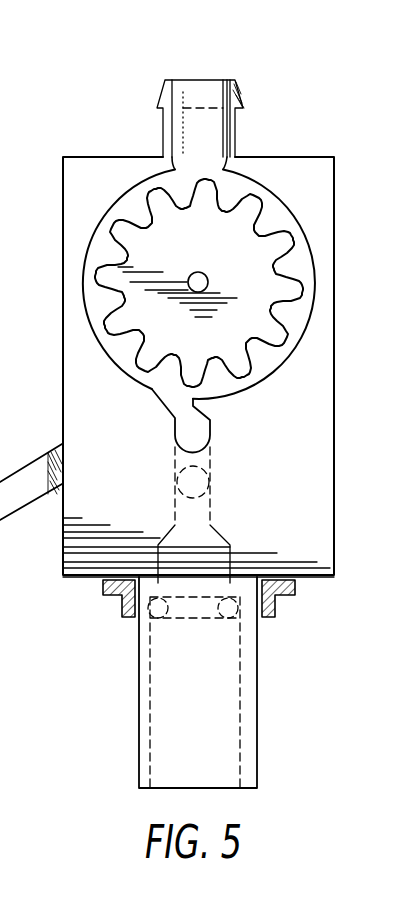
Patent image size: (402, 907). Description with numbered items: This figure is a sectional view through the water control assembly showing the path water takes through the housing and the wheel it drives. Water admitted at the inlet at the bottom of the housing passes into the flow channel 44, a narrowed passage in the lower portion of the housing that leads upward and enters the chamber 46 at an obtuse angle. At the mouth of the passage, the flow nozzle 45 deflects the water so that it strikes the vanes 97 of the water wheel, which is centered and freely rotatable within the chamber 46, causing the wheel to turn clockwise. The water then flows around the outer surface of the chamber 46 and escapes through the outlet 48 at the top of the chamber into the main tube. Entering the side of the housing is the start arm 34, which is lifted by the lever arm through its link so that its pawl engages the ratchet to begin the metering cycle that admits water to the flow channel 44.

The start arm 34 is at (27, 504).
The flow channel 44 is at (205, 482).
The flow nozzle 45 is at (197, 408).
The chamber 46 is at (264, 362).
The outlet 48 is at (206, 80).
The vanes 97 is at (263, 213).